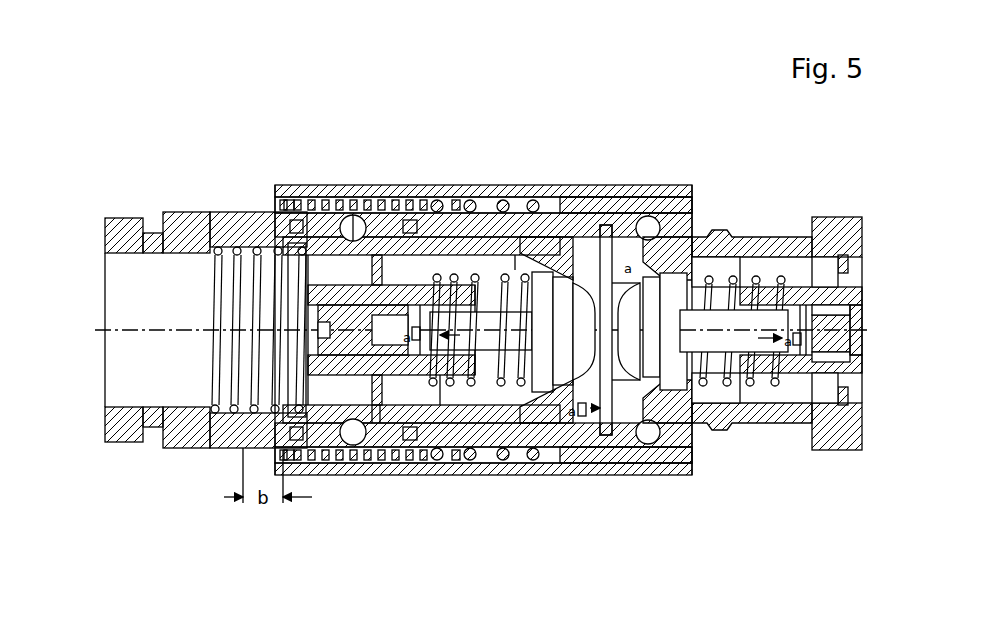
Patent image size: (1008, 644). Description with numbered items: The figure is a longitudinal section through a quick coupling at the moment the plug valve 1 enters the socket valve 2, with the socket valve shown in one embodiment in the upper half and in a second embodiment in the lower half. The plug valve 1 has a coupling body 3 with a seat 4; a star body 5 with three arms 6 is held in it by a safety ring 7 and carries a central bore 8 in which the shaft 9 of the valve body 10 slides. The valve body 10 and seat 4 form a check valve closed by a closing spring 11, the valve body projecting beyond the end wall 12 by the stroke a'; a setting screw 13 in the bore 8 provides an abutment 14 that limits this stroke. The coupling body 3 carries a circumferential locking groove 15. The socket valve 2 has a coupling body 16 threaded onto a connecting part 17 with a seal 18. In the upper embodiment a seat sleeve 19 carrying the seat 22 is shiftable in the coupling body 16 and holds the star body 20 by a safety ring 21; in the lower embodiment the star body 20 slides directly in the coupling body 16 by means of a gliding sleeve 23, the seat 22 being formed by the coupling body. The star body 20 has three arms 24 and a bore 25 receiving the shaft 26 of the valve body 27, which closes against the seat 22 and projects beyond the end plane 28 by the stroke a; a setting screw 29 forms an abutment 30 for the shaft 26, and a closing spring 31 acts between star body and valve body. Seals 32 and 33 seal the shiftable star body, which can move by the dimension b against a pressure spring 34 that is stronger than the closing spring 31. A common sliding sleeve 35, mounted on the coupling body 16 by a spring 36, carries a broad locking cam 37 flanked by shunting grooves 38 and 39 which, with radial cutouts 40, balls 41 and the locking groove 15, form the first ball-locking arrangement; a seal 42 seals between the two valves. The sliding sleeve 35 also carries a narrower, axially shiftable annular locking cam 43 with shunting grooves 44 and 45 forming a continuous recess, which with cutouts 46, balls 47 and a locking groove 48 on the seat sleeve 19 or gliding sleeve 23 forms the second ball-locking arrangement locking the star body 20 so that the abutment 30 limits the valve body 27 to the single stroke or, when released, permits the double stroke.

The plug valve 1 is at (775, 425).
The socket valve 2 is at (236, 449).
The coupling body 3 is at (812, 443).
The seat 4 is at (668, 478).
The star body 5 is at (838, 452).
The arms 6 is at (823, 216).
The safety ring 7 is at (856, 216).
The bore 8 is at (797, 262).
The shaft 9 is at (742, 290).
The valve body 10 is at (708, 322).
The closing spring 11 is at (708, 445).
The end wall 12 is at (640, 478).
The setting screw 13 is at (850, 452).
The abutment 14 is at (820, 452).
The locking groove 15 is at (715, 430).
The coupling body 16 is at (462, 478).
The connecting part 17 is at (122, 443).
The seal 18 is at (212, 449).
The seat sleeve 19 is at (540, 190).
The star body 20 is at (410, 200).
The safety ring 21 is at (396, 303).
The seat 22 is at (565, 235).
The gliding sleeve 23 is at (422, 478).
The arms 24 is at (455, 274).
The bore 25 is at (432, 478).
The shaft 26 is at (513, 478).
The valve body 27 is at (545, 478).
The end plane 28 is at (578, 478).
The setting screw 29 is at (292, 198).
The abutment 30 is at (474, 192).
The closing spring 31 is at (500, 478).
The seal 32 is at (274, 190).
The seal 33 is at (425, 284).
The pressure spring 34 is at (243, 420).
The sliding sleeve 35 is at (455, 198).
The spring 36 is at (503, 198).
The locking cam 37 is at (630, 235).
The shunting groove 38 is at (626, 238).
The shunting groove 39 is at (680, 200).
The radial cutouts 40 is at (665, 478).
The balls 41 is at (650, 216).
The seal 42 is at (607, 223).
The locking cam 43 is at (352, 188).
The shunting groove 44 is at (300, 218).
The shunting groove 45 is at (378, 253).
The cutouts 46 is at (376, 476).
The balls 47 is at (330, 476).
The locking groove 48 is at (405, 218).